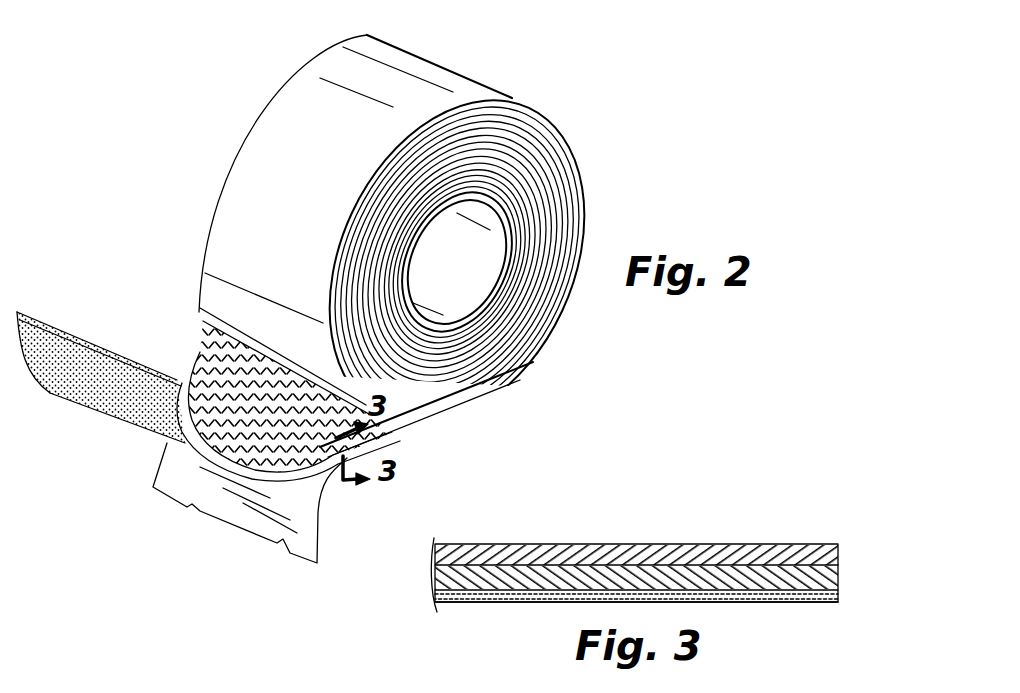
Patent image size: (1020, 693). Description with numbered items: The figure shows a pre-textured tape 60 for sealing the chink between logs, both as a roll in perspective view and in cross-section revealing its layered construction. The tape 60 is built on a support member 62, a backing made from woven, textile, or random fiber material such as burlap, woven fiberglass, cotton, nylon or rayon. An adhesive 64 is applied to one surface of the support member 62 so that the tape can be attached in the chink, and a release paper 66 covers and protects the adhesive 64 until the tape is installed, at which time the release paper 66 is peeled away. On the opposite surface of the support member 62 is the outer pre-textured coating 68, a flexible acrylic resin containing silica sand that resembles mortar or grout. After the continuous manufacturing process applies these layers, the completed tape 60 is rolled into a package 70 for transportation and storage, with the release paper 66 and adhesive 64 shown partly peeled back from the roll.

In FIG. 2, the pre-textured tape 60 is at (612, 199).
In FIG. 3, the pre-textured tape 60 is at (668, 522).
In FIG. 2, the support member 62 is at (50, 327).
In FIG. 3, the support member 62 is at (840, 567).
In FIG. 2, the adhesive 64 is at (107, 403).
In FIG. 3, the adhesive 64 is at (846, 587).
In FIG. 2, the release paper 66 is at (245, 520).
In FIG. 3, the release paper 66 is at (748, 602).
In FIG. 2, the pre-textured coating 68 is at (230, 377).
In FIG. 3, the pre-textured coating 68 is at (803, 544).
In FIG. 2, the package 70 is at (287, 137).